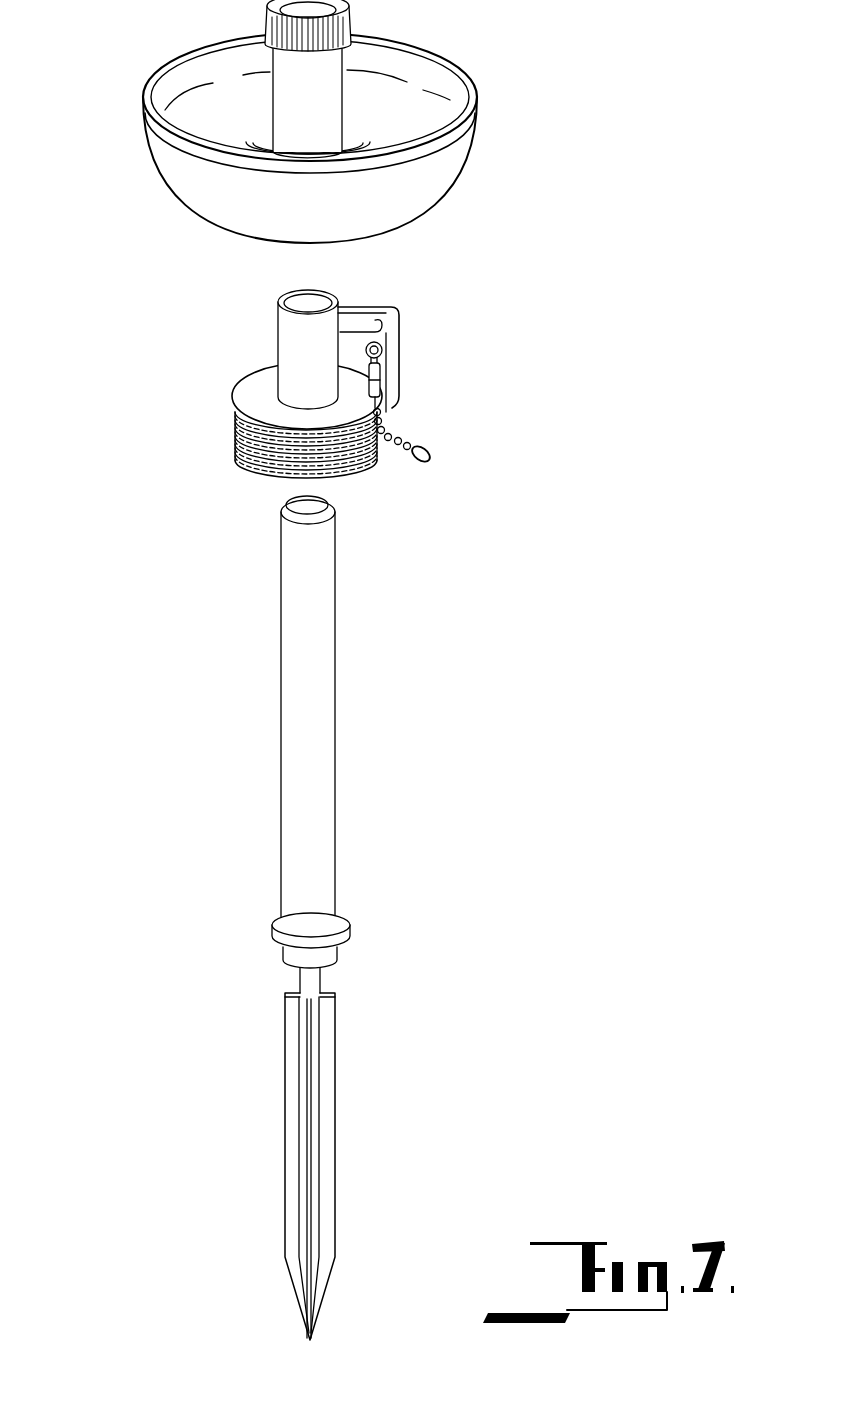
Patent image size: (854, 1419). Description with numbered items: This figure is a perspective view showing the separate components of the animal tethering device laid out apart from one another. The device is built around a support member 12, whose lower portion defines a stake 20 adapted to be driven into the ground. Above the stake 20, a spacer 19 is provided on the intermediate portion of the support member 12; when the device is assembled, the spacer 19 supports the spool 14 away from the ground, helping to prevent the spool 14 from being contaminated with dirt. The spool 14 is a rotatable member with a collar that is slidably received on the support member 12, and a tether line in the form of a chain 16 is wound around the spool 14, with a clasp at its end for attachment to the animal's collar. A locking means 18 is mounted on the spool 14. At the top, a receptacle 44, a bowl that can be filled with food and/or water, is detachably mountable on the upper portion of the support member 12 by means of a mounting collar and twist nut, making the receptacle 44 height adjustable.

The receptacle 44 is at (197, 80).
The spool 14 is at (245, 390).
The chain 16 is at (233, 437).
The locking means 18 is at (400, 393).
The support member 12 is at (295, 880).
The spacer 19 is at (280, 947).
The stake 20 is at (295, 1170).